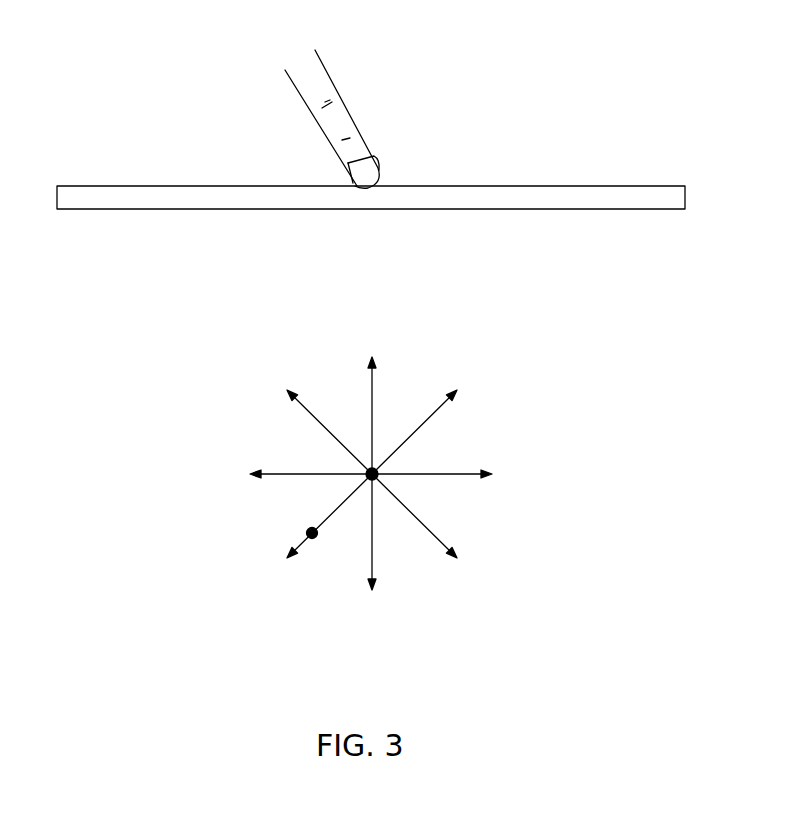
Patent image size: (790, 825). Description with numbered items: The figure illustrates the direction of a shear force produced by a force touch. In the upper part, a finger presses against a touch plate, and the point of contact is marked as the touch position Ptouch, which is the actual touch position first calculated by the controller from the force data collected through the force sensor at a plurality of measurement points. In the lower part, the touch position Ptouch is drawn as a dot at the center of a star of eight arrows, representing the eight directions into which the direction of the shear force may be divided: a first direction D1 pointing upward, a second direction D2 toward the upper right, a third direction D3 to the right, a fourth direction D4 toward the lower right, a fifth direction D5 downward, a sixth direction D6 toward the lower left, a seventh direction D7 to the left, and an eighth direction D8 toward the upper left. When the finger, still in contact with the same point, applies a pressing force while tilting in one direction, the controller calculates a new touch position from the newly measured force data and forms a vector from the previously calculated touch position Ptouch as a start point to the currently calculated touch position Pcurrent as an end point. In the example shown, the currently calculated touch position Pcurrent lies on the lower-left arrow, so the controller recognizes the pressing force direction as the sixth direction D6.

The touch position Ptouch is at (438, 497).
The currently calculated touch position Pcurrent is at (274, 523).
The first direction D1 is at (374, 400).
The second direction D2 is at (431, 421).
The third direction D3 is at (449, 475).
The fourth direction D4 is at (431, 528).
The fifth direction D5 is at (374, 549).
The sixth direction D6 is at (315, 529).
The seventh direction D7 is at (295, 475).
The eighth direction D8 is at (315, 421).